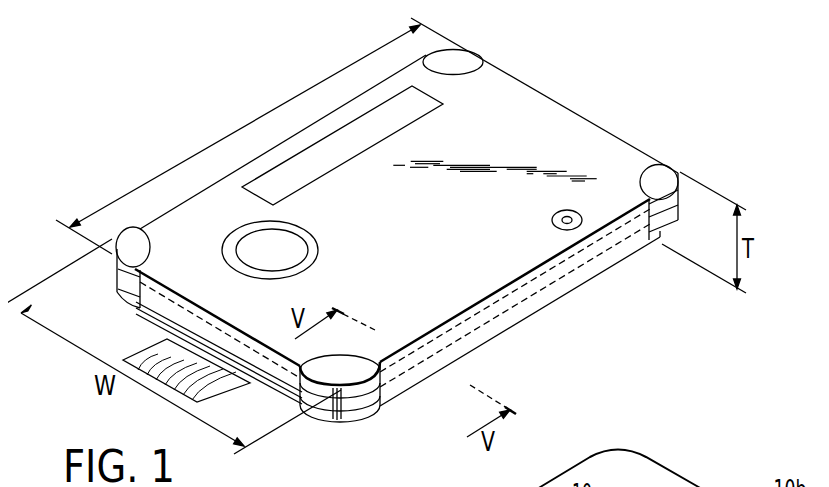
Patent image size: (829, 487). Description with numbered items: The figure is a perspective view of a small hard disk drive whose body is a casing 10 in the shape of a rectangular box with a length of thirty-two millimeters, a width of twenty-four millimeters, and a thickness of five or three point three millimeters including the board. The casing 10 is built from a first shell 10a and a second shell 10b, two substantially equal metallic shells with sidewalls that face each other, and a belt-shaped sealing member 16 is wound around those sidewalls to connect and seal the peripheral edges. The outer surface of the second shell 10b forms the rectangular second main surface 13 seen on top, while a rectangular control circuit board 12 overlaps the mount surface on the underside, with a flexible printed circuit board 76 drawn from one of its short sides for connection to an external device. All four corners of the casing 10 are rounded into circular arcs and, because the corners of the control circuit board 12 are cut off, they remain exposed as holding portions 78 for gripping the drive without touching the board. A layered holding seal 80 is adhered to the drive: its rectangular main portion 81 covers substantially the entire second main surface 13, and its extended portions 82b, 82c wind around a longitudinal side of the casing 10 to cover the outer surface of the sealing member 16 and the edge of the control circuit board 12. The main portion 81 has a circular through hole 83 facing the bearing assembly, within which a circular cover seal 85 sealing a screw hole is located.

The casing 10 is at (565, 83).
The first shell 10a is at (640, 242).
The second shell 10b is at (617, 147).
The control circuit board 12 is at (507, 328).
The second main surface 13 is at (470, 60).
The sealing member 16 is at (535, 287).
The flexible printed circuit board 76 is at (153, 355).
The holding portions 78 is at (115, 290).
The holding seal 80 is at (558, 142).
The main portion 81 is at (505, 108).
The extended portion 82b is at (415, 373).
The extended portion 82c is at (598, 267).
The circular through hole 83 is at (240, 253).
The cover seal 85 is at (288, 237).